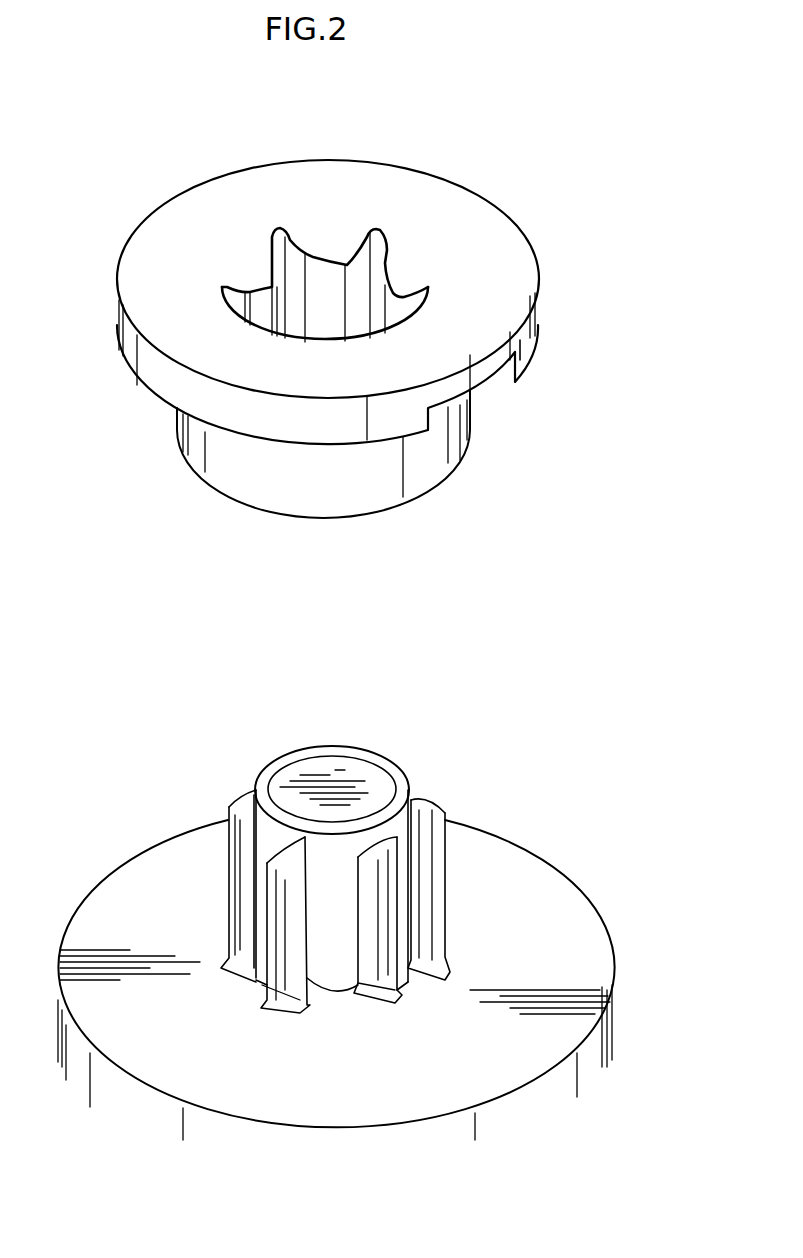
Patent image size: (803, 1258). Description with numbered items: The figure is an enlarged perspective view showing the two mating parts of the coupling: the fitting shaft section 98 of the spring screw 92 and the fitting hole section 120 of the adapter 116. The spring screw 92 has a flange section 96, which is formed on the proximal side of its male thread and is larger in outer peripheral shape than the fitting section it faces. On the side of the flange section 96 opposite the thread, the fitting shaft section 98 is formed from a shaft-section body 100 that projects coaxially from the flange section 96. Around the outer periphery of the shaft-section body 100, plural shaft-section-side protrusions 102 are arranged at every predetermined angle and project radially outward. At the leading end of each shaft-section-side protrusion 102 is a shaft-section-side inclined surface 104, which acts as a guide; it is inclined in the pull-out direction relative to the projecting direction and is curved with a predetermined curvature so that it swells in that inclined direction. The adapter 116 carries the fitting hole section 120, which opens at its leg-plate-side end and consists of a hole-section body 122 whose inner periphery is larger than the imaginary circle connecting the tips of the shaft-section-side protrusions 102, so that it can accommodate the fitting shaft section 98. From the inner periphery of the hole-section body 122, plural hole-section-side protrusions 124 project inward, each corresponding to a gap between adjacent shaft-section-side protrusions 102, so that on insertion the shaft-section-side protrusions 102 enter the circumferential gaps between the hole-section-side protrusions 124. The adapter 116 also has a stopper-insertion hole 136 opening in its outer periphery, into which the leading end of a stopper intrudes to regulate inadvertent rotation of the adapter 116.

The spring screw 92 is at (583, 867).
The flange section 96 is at (595, 918).
The fitting shaft section 98 is at (430, 783).
The shaft-section body 100 is at (330, 757).
The shaft-section-side protrusions 102 is at (243, 935).
The shaft-section-side inclined surface 104 is at (377, 840).
The adapter 116 is at (292, 427).
The fitting hole section 120 is at (273, 233).
The hole-section body 122 is at (325, 316).
The hole-section-side protrusions 124 is at (252, 277).
The stopper-insertion hole 136 is at (517, 357).